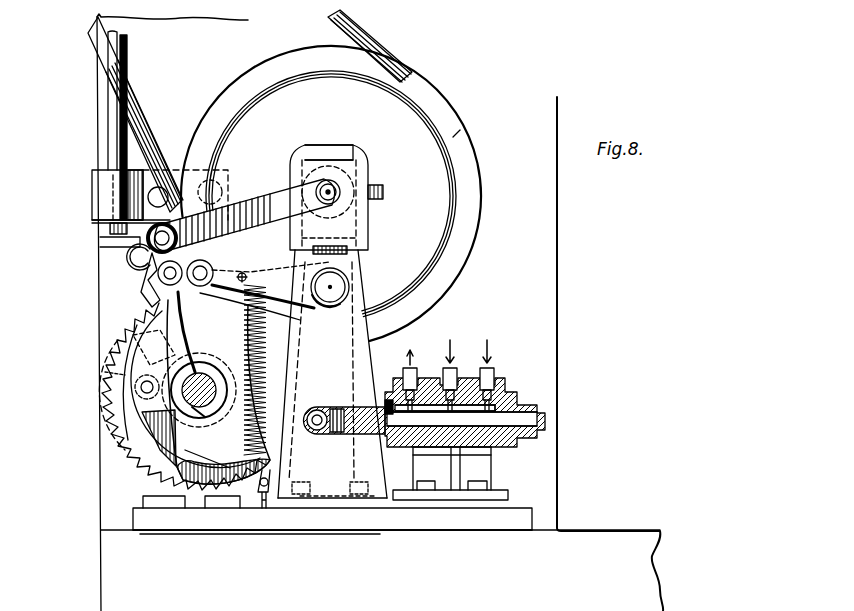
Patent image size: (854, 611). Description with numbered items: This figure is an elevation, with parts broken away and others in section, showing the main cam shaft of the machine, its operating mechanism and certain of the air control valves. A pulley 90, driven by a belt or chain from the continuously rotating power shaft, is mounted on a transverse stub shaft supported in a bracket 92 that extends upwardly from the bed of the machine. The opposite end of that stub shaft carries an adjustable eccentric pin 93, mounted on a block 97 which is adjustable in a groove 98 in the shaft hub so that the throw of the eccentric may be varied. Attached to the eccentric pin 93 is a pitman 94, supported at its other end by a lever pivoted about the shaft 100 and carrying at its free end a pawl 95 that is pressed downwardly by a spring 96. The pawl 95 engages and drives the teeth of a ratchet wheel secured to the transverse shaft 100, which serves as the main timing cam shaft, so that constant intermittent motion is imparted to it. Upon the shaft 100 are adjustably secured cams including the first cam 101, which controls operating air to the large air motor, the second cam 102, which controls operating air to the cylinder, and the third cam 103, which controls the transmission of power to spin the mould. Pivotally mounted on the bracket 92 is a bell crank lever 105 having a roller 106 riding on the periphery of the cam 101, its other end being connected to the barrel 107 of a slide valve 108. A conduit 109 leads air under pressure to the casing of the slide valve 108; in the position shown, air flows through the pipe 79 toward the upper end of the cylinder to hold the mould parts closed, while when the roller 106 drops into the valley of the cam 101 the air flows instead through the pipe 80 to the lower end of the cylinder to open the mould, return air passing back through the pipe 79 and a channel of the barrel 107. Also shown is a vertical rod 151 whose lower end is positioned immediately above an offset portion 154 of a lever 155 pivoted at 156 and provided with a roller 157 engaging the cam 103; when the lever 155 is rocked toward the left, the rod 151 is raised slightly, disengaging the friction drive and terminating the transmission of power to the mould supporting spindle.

The pipe 79 is at (417, 365).
The pipe 80 is at (495, 365).
The pulley 90 is at (455, 145).
The bracket 92 is at (322, 485).
The eccentric pin 93 is at (340, 186).
The pitman 94 is at (263, 197).
The pawl 95 is at (142, 292).
The spring 96 is at (158, 277).
The block 97 is at (341, 162).
The groove 98 is at (321, 145).
The shaft 100 is at (190, 440).
The first cam 101 is at (282, 458).
The second cam 102 is at (304, 323).
The third cam 103 is at (100, 432).
The bell crank lever 105 is at (340, 343).
The roller 106 is at (213, 264).
The barrel 107 is at (368, 433).
The slide valve 108 is at (510, 385).
The conduit 109 is at (458, 365).
The vertical rod 151 is at (105, 150).
The offset portion 154 is at (110, 228).
The lever 155 is at (127, 310).
The pivot 156 is at (130, 257).
The roller 157 is at (130, 393).